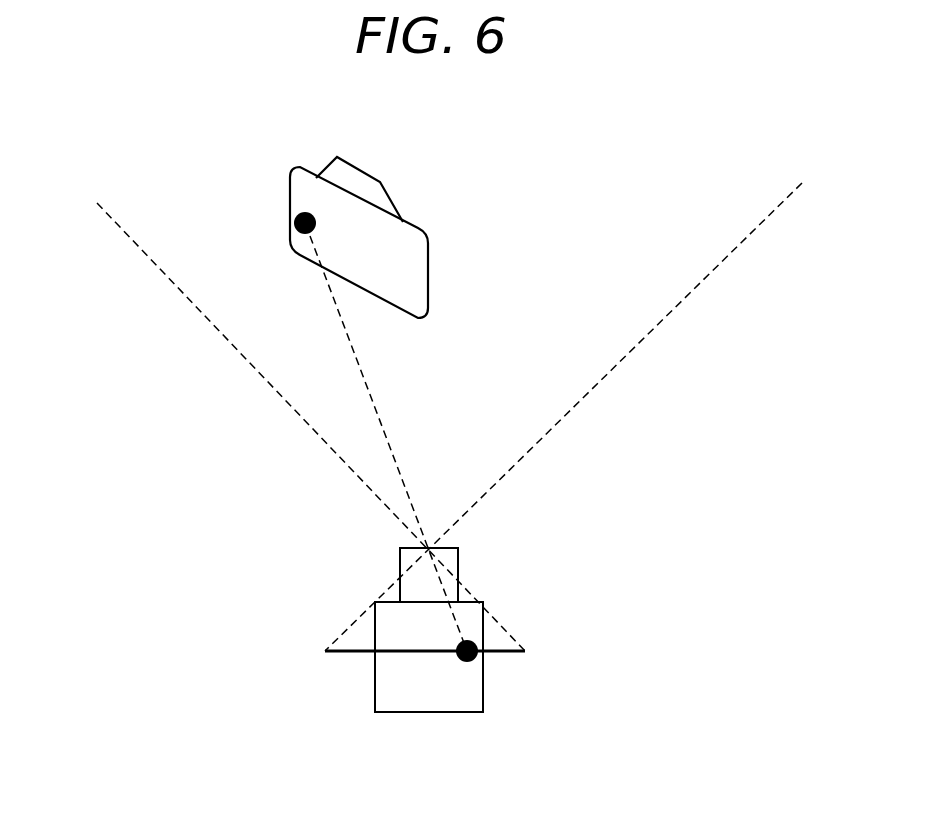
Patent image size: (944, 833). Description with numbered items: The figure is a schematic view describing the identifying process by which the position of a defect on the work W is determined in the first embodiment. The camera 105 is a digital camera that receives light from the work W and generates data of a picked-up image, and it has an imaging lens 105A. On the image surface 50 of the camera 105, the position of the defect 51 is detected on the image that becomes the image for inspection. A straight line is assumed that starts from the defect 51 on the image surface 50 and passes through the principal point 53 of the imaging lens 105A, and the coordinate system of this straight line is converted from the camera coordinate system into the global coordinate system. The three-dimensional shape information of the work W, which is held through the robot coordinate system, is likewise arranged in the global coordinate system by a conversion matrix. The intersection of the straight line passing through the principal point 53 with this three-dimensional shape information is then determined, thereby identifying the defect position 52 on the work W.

The work W is at (428, 267).
The defect position 52 is at (293, 223).
The principal point 53 is at (430, 548).
The imaging lens 105A is at (458, 572).
The camera 105 is at (442, 712).
The image surface 50 is at (490, 653).
The defect 51 is at (468, 660).